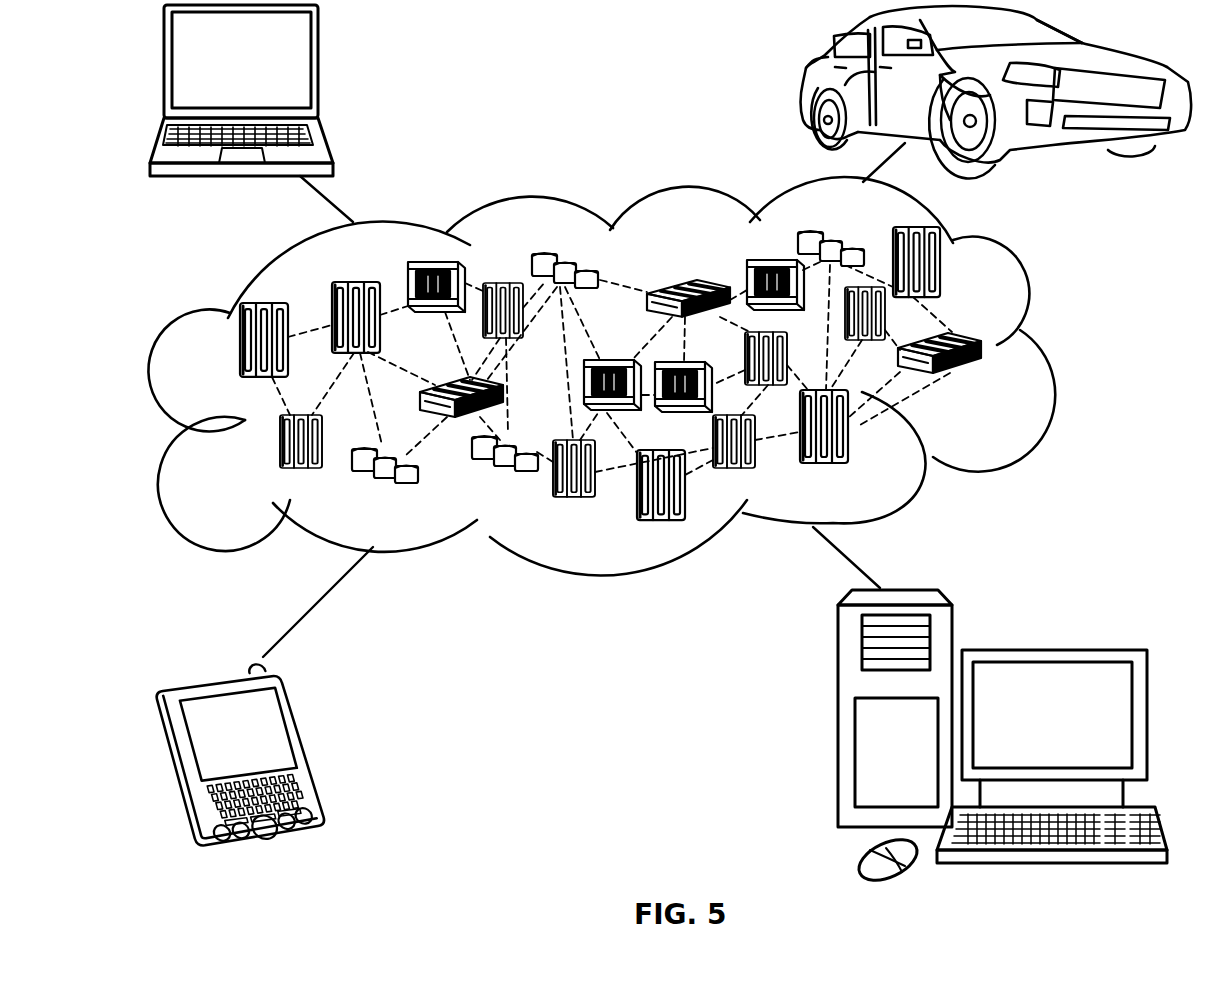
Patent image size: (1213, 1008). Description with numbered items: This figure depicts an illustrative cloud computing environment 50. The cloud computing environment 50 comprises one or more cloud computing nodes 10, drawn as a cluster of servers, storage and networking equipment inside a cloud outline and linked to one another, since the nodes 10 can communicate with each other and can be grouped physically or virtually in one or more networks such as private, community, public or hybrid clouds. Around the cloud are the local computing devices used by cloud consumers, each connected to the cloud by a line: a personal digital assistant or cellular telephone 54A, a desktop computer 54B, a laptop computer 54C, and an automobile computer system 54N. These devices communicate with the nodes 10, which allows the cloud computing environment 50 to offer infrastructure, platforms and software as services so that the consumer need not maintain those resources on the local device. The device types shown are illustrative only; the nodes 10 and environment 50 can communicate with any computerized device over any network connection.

The cloud computing node 10 is at (997, 387).
The cloud computing environment 50 is at (634, 376).
The personal digital assistant or cellular telephone 54A is at (305, 746).
The desktop computer 54B is at (1050, 650).
The laptop computer 54C is at (320, 70).
The automobile computer system 54N is at (803, 84).